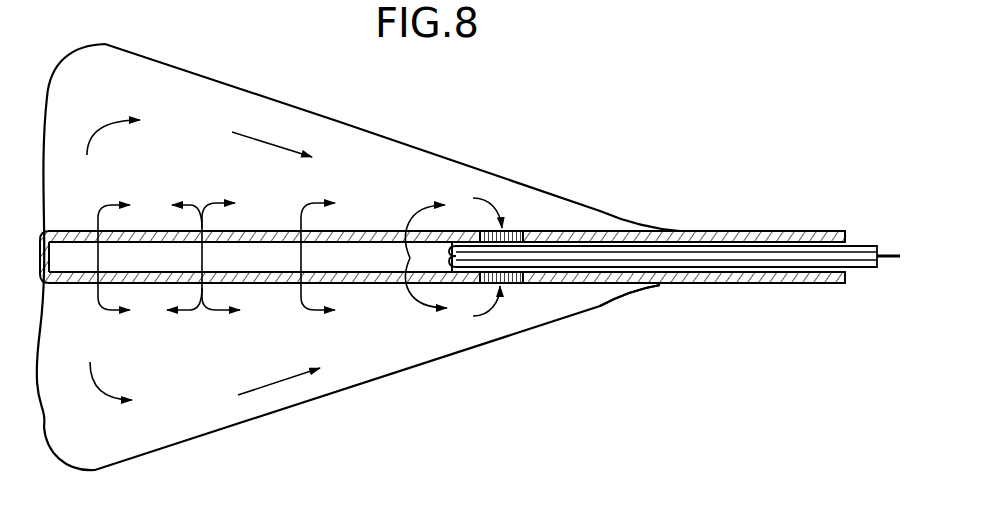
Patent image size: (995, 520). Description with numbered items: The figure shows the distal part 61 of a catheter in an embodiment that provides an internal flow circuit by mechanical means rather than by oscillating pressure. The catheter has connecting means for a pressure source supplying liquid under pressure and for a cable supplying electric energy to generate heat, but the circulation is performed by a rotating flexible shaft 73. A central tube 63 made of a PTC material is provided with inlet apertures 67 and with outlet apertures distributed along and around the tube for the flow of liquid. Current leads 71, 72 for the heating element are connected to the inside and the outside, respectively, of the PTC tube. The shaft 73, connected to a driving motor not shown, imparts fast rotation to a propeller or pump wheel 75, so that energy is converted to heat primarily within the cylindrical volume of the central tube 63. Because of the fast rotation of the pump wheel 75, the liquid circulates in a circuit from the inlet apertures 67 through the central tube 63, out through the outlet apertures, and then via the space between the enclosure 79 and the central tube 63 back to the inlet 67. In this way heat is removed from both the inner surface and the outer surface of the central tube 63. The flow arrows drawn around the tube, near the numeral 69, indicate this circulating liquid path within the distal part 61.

The distal part 61 is at (347, 121).
The central tube 63 is at (147, 284).
The inlet apertures 67 is at (517, 229).
The flow openings 69 is at (92, 232).
The current lead 71 is at (729, 232).
The current lead 72 is at (682, 284).
The rotating flexible shaft 73 is at (760, 256).
The pump wheel 75 is at (453, 243).
The enclosure 79 is at (323, 395).